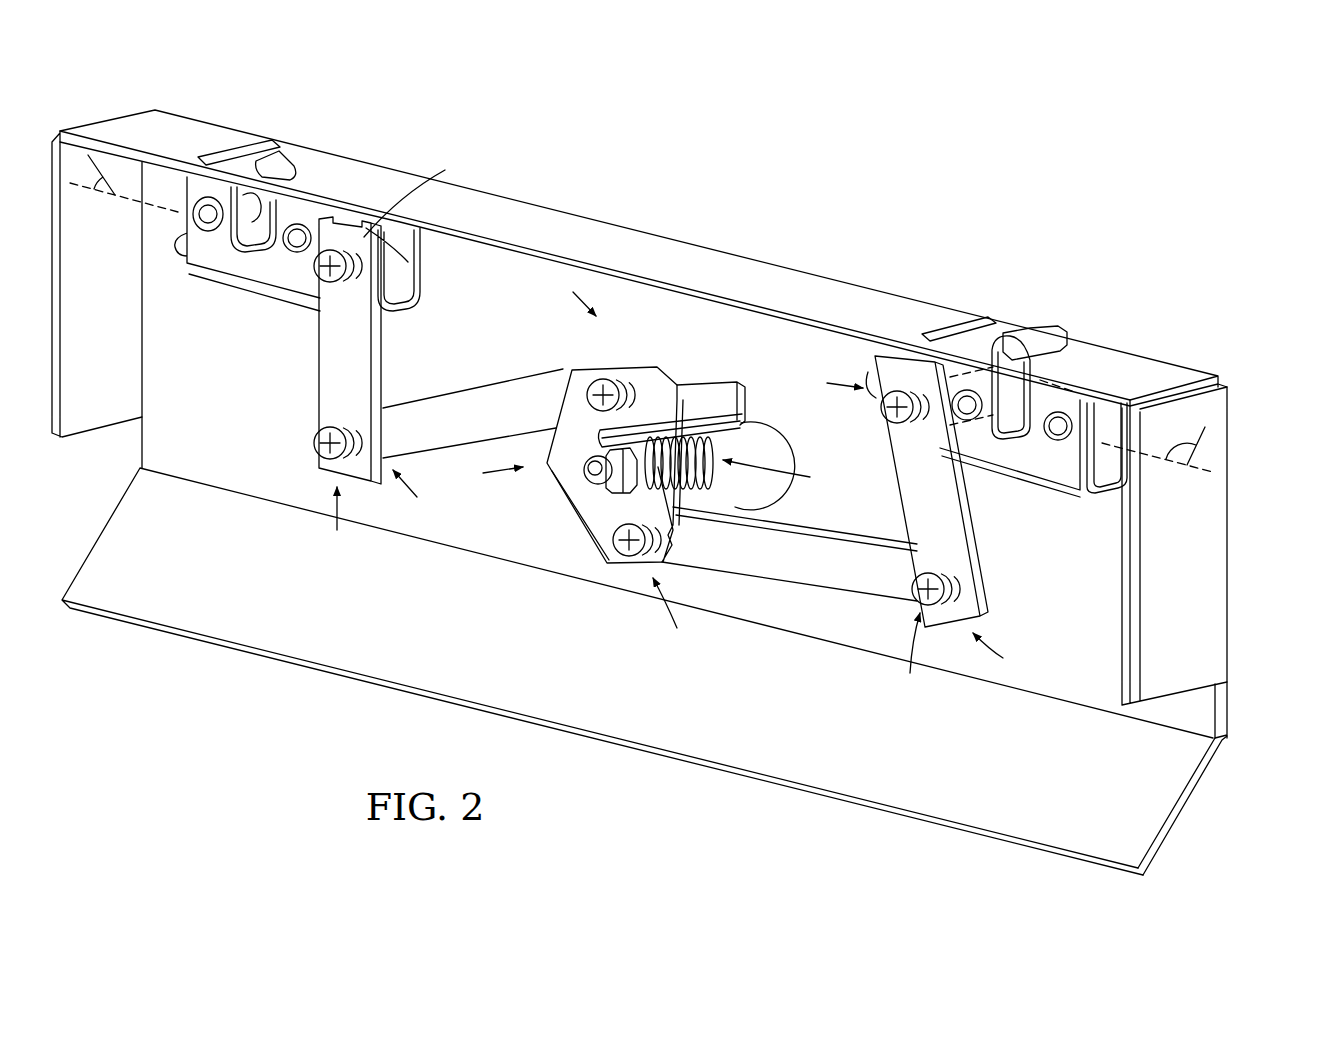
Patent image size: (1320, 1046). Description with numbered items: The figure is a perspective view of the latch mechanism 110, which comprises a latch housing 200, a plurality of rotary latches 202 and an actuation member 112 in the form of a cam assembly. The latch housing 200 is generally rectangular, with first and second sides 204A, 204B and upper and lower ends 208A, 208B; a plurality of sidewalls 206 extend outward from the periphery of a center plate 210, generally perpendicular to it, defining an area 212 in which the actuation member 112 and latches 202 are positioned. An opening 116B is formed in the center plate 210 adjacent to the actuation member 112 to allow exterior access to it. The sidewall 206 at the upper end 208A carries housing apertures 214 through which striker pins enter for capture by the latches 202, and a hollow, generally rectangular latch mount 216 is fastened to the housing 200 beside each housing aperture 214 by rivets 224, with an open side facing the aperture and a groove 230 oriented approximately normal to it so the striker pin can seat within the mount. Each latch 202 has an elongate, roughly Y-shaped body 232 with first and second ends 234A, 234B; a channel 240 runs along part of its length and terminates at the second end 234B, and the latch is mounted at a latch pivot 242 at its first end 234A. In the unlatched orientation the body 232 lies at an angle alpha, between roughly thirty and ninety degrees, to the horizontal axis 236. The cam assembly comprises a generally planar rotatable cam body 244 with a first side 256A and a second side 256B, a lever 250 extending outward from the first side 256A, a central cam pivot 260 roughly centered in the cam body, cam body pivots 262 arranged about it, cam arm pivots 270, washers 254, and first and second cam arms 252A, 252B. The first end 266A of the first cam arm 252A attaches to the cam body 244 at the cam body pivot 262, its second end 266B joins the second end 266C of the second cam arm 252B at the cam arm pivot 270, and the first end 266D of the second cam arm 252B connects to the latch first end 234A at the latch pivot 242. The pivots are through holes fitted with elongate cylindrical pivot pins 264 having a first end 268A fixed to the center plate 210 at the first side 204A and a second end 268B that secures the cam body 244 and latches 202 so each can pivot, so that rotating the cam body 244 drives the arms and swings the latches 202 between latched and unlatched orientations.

The latch mechanism 110 is at (1172, 215).
The actuation member 112 is at (670, 350).
The opening 116B is at (753, 443).
The latch housing 200 is at (1230, 650).
The latch 202 is at (279, 160).
The first side 204A is at (482, 329).
The second side 204B is at (1230, 540).
The sidewall 206 is at (86, 306).
The upper end 208A is at (1250, 370).
The lower end 208B is at (1213, 837).
The center plate 210 is at (177, 437).
The area 212 is at (190, 458).
The housing aperture 214 is at (318, 132).
The latch mount 216 is at (197, 243).
The rivet 224 is at (294, 259).
The groove 230 is at (237, 248).
The latch body 232 is at (286, 175).
The first end 234A is at (400, 158).
The second end 234B is at (262, 123).
The horizontal axis 236 is at (163, 212).
The channel 240 is at (256, 250).
The latch pivot 242 is at (416, 237).
The rotatable cam body 244 is at (603, 533).
The lever 250 is at (673, 427).
The first cam arm 252A is at (492, 417).
The second cam arm 252B is at (337, 367).
The washer 254 is at (710, 470).
The first side 256A is at (603, 503).
The second side 256B is at (714, 377).
The central cam pivot 260 is at (587, 453).
The cam body pivot 262 is at (623, 365).
The pivot pin 264 is at (341, 283).
The first end of first cam arm 266A is at (620, 459).
The second end of first cam arm 266B is at (664, 586).
The second end of second cam arm 266C is at (683, 578).
The first end of second cam arm 266D is at (613, 271).
The first end of pivot pin 268A is at (789, 475).
The second end of pivot pin 268B is at (474, 470).
The cam arm pivot 270 is at (313, 457).